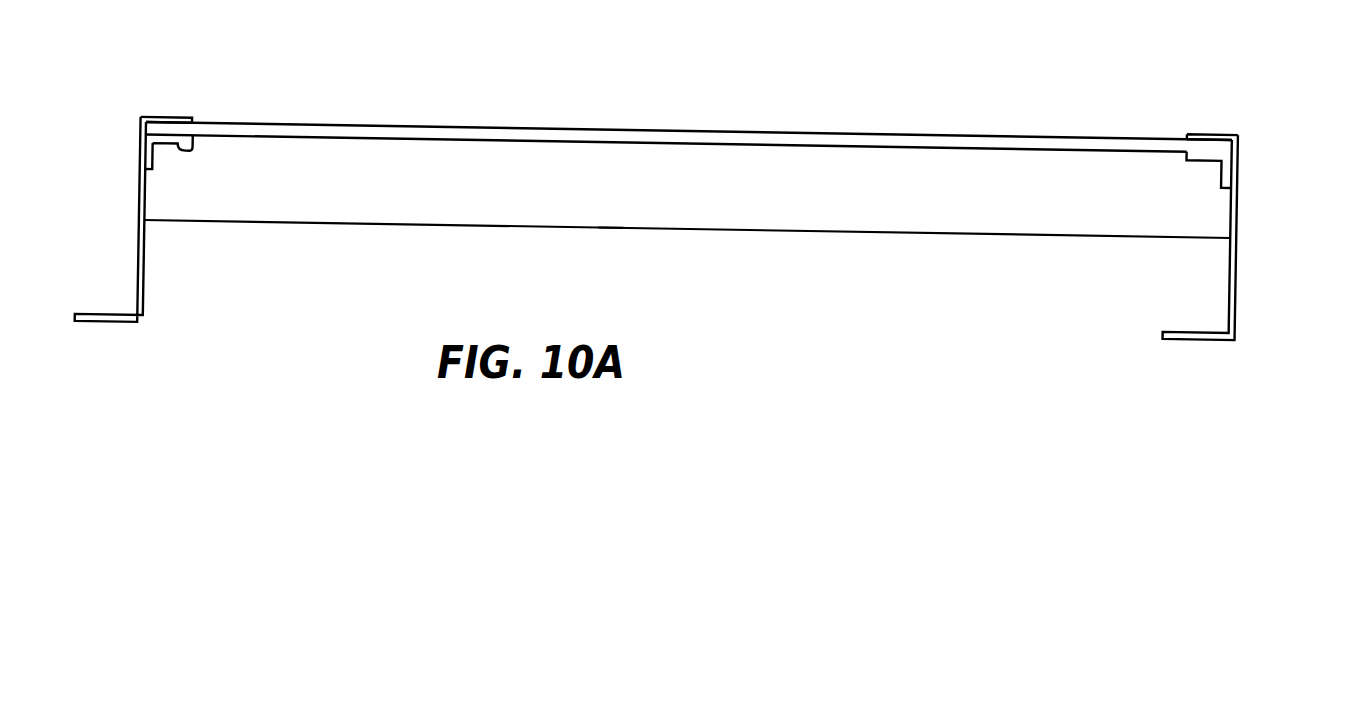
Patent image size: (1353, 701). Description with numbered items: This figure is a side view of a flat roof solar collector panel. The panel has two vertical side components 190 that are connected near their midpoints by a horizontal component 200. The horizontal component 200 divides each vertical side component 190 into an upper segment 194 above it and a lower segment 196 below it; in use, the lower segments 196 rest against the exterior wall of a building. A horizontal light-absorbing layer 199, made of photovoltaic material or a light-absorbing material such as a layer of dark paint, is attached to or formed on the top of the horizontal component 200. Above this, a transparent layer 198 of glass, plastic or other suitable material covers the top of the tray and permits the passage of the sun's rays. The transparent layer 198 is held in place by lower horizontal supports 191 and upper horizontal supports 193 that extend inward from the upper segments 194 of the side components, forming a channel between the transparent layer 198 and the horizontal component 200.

The vertical side component 190 is at (1269, 137).
The lower horizontal support 191 is at (183, 150).
The upper horizontal support 193 is at (176, 117).
The upper segment 194 is at (146, 194).
The lower segment 196 is at (139, 264).
The transparent layer 198 is at (735, 130).
The light-absorbing layer 199 is at (616, 217).
The horizontal component 200 is at (867, 231).